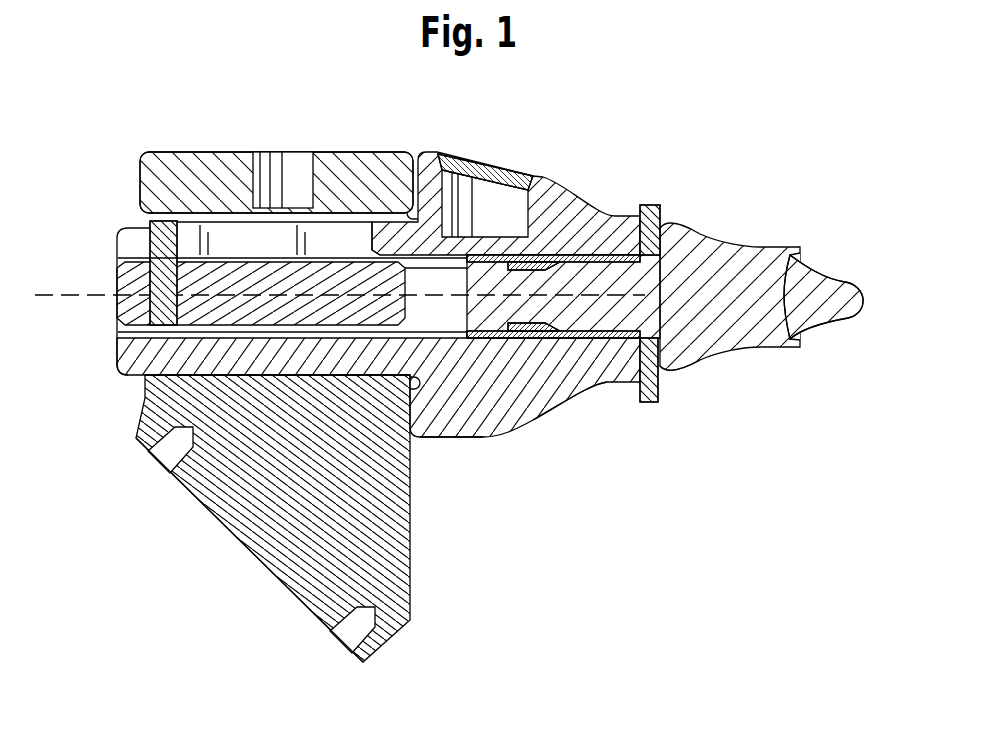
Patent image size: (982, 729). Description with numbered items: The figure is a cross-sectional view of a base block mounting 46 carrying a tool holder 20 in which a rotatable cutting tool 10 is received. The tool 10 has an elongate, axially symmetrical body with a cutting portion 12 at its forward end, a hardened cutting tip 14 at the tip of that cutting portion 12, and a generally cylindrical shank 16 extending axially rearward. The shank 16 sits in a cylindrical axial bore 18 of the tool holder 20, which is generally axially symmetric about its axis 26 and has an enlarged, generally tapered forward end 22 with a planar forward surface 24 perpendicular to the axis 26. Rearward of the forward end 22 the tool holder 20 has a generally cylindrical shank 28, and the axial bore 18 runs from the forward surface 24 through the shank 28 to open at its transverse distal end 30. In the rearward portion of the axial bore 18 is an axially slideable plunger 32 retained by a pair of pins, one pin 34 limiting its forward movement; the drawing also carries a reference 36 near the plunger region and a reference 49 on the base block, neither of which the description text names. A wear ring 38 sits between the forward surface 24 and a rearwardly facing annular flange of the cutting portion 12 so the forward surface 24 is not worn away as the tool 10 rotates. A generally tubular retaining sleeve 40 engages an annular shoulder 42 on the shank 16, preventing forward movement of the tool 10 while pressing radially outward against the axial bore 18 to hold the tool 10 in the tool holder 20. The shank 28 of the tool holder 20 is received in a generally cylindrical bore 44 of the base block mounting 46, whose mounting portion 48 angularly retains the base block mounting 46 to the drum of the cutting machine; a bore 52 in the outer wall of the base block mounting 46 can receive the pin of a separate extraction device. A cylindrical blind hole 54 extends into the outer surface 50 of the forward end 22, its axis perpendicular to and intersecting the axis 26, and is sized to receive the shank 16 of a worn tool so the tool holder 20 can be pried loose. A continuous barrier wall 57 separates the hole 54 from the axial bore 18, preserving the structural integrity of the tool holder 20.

The tool 10 is at (776, 292).
The cutting portion 12 is at (763, 348).
The hardened cutting tip 14 is at (852, 280).
The shank 16 is at (603, 250).
The axial bore 18 is at (697, 352).
The tool holder 20 is at (538, 417).
The forward end 22 is at (485, 437).
The forward surface 24 is at (652, 230).
The axis 26 is at (70, 295).
The shank 28 is at (143, 373).
The distal end 30 is at (125, 230).
The plunger 32 is at (260, 235).
The pin 34 is at (143, 237).
The cap member 36 is at (230, 262).
The wear ring 38 is at (648, 402).
The retaining sleeve 40 is at (556, 268).
The annular shoulder 42 is at (548, 255).
The bore 44 is at (143, 375).
The base block mounting 46 is at (420, 527).
The mounting portion 48 is at (257, 560).
The block base 49 is at (290, 375).
The outer surface 50 is at (440, 438).
The bore 52 is at (313, 180).
The blind hole 54 is at (507, 208).
The barrier wall 57 is at (492, 232).